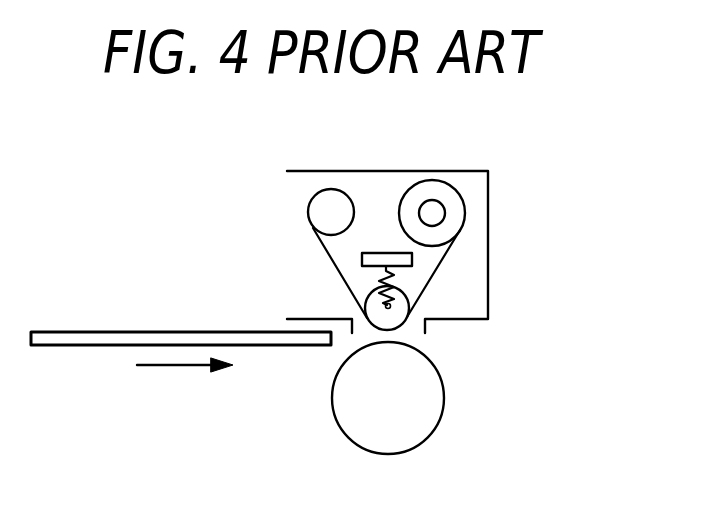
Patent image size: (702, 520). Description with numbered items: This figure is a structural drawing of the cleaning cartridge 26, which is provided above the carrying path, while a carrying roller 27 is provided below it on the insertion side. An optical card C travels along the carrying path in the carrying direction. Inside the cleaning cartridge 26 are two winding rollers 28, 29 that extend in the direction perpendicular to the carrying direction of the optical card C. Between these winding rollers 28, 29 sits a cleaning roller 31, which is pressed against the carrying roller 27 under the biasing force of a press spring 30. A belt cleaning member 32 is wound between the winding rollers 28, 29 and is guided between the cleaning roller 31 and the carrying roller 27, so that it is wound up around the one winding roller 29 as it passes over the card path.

The cleaning cartridge 26 is at (488, 188).
The carrying roller 27 is at (432, 432).
The winding roller 28 is at (333, 200).
The winding roller 29 is at (443, 193).
The press spring 30 is at (378, 274).
The cleaning roller 31 is at (407, 325).
The belt cleaning member 32 is at (443, 260).
The optical card C is at (125, 330).